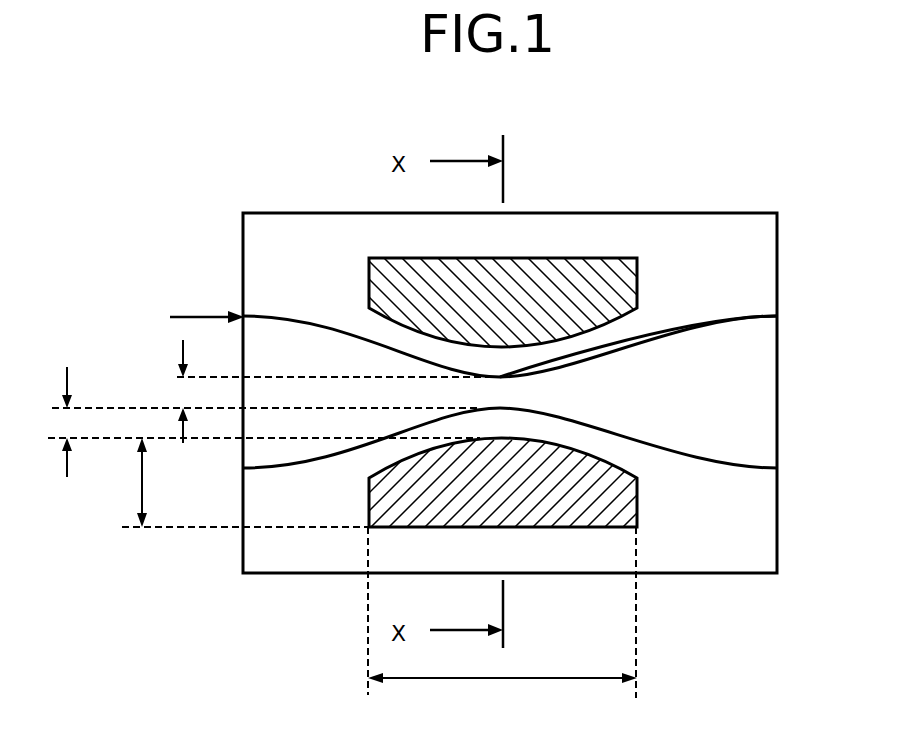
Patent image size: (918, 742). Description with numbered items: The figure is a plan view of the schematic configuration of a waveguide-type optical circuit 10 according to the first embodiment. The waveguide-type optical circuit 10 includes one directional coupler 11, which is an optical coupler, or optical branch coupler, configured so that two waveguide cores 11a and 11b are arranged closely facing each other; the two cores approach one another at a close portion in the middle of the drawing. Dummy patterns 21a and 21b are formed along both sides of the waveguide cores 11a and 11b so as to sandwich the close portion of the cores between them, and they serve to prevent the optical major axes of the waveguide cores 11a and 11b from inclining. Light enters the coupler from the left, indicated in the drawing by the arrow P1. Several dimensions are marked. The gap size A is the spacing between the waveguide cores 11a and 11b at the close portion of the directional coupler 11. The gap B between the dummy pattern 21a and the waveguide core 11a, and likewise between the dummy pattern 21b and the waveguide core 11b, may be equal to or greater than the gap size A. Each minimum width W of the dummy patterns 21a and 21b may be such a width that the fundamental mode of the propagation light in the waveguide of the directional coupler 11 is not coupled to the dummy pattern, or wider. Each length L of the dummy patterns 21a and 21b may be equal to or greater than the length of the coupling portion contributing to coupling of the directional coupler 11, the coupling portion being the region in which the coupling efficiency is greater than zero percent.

The waveguide-type optical circuit 10 is at (678, 192).
The directional coupler 11 is at (354, 337).
The waveguide core 11a is at (655, 337).
The waveguide core 11b is at (612, 430).
The dummy pattern 21a is at (571, 277).
The dummy pattern 21b is at (413, 517).
The fluid flow direction / inlet pressure P1 is at (235, 308).
The gap size A is at (165, 391).
The gap B is at (49, 422).
The minimum width W is at (120, 482).
The length L is at (502, 696).